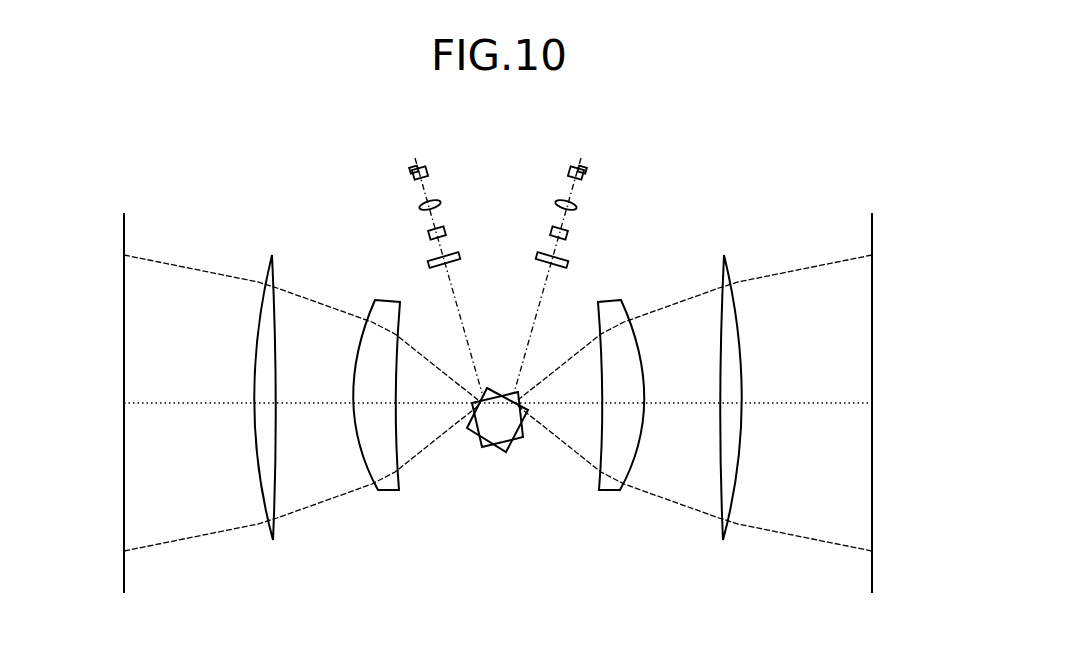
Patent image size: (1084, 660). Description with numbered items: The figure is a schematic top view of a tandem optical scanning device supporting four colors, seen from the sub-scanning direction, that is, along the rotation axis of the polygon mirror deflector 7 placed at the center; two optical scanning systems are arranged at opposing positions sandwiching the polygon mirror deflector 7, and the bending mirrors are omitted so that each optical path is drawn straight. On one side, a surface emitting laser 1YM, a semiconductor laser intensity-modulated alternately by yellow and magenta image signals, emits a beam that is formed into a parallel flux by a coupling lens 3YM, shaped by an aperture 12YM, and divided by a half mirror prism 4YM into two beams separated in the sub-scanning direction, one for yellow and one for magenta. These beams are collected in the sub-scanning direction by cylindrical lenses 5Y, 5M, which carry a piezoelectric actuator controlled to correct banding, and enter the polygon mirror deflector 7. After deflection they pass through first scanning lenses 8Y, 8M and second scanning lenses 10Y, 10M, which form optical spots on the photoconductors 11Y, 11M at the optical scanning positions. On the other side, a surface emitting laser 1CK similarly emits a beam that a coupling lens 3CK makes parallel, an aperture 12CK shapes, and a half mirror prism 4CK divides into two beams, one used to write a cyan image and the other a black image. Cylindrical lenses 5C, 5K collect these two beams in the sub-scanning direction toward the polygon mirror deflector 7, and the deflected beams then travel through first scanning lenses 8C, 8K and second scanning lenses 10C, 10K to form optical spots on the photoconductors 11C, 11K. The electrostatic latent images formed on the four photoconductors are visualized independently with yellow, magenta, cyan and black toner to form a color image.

The surface emitting laser 1CK is at (412, 164).
The surface emitting laser 1YM is at (584, 164).
The coupling lens 3CK is at (420, 203).
The coupling lens 3YM is at (578, 202).
The half mirror prism 4CK is at (428, 236).
The half mirror prism 4YM is at (572, 237).
The cylindrical lens 5C is at (476, 276).
The cylindrical lens 5K is at (452, 265).
The cylindrical lens 5Y is at (593, 272).
The cylindrical lens 5M is at (566, 266).
The aperture 12CK is at (447, 218).
The aperture 12YM is at (555, 220).
The polygon mirror deflector 7 is at (499, 455).
The first scanning lens 8C is at (341, 395).
The first scanning lens 8K is at (358, 362).
The first scanning lens 8Y is at (647, 395).
The first scanning lens 8M is at (640, 348).
The second scanning lens 10C is at (213, 397).
The second scanning lens 10K is at (260, 343).
The second scanning lens 10Y is at (783, 397).
The second scanning lens 10M is at (778, 337).
The photoconductor 11C is at (175, 386).
The photoconductor 11K is at (125, 233).
The photoconductor 11Y is at (812, 393).
The photoconductor 11M is at (870, 232).